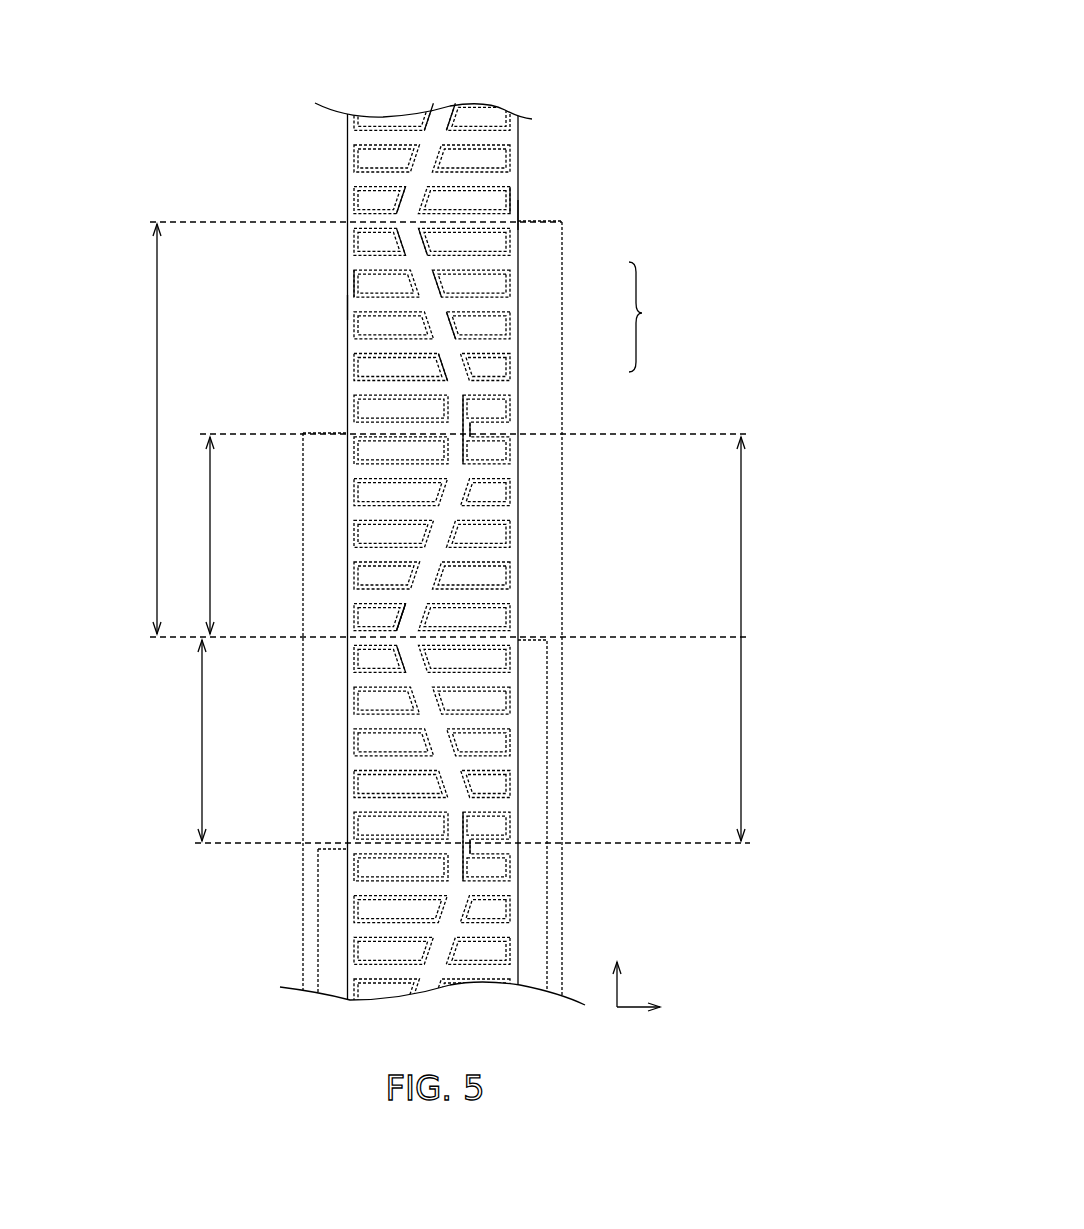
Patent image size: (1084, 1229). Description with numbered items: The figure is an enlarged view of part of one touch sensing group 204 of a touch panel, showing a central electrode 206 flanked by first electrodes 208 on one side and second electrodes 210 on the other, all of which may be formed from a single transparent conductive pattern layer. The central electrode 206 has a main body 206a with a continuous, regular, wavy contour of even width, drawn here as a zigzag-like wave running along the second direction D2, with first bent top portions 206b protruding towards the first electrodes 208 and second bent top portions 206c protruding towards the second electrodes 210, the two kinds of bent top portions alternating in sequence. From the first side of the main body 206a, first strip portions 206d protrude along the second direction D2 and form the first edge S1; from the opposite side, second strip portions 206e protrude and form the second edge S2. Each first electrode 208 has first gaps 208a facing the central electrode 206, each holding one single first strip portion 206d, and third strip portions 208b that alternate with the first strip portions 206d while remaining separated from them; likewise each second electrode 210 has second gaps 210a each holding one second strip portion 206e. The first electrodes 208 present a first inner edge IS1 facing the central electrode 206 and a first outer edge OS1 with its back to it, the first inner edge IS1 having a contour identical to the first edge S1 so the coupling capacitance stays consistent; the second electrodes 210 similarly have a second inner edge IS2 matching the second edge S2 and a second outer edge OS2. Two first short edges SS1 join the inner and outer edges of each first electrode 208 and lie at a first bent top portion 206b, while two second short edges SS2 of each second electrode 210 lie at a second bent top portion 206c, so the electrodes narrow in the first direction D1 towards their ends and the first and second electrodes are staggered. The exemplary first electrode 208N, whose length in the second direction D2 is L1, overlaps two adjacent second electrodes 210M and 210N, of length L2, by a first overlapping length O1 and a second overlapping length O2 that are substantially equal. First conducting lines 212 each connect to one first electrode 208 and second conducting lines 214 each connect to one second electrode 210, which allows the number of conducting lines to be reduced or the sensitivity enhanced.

The touch sensing group 204 is at (603, 76).
The second electrode 210 is at (316, 554).
The second gap 210a is at (354, 166).
The second electrode 210M is at (382, 386).
The second electrode 210N is at (362, 810).
The first electrode 208 is at (582, 556).
The first gap 208a is at (513, 156).
The third strip portion 208b is at (524, 136).
The first electrode 208N is at (508, 515).
The central electrode 206 is at (642, 313).
The main body 206a is at (485, 292).
The first bent top portion 206b is at (468, 440).
The second bent top portion 206c is at (420, 240).
The first strip portion 206d is at (482, 328).
The second strip portion 206e is at (458, 356).
The first conducting line 212 is at (566, 770).
The second conducting line 214 is at (305, 860).
The first edge S1 is at (455, 140).
The second edge S2 is at (405, 135).
The first short edge SS1 is at (472, 432).
The second short edge SS2 is at (396, 222).
The first inner edge IS1 is at (516, 192).
The second inner edge IS2 is at (352, 287).
The first outer edge OS1 is at (520, 218).
The second outer edge OS2 is at (348, 307).
The length of the first electrodes L1 is at (484, 640).
The length of the second electrodes L2 is at (338, 428).
The first overlapping length O1 is at (462, 534).
The second overlapping length O2 is at (450, 739).
The first direction D1 is at (657, 1008).
The second direction D2 is at (617, 968).